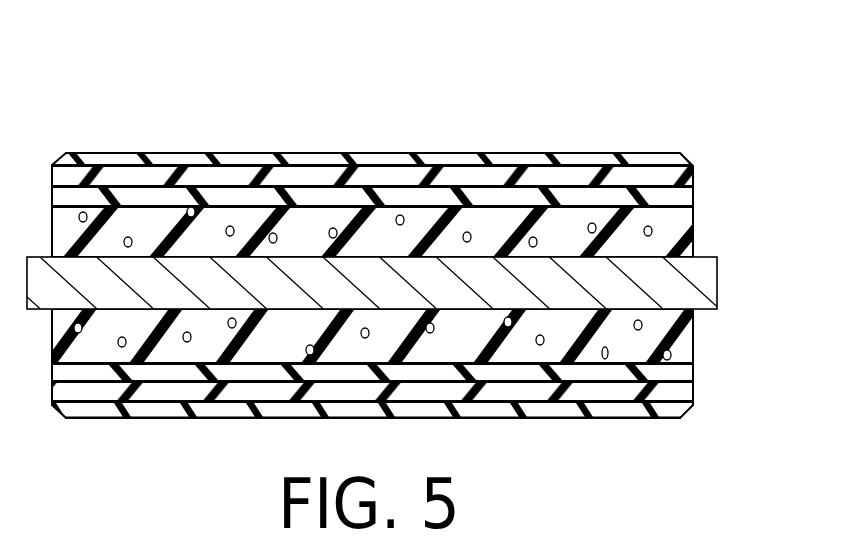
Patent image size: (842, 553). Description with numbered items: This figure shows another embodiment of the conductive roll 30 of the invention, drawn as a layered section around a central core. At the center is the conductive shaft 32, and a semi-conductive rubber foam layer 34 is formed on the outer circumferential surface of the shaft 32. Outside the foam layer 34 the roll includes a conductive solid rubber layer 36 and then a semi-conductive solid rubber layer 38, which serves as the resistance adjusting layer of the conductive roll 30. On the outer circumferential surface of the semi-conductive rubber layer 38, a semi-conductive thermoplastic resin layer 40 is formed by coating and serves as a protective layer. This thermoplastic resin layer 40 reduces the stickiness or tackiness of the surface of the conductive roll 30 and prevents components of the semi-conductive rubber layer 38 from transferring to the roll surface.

The conductive roll 30 is at (666, 94).
The conductive shaft 32 is at (707, 287).
The semi-conductive rubber foam layer 34 is at (671, 229).
The conductive solid rubber layer 36 is at (675, 372).
The semi-conductive solid rubber layer 38 is at (665, 178).
The semi-conductive thermoplastic resin layer 40 is at (620, 413).